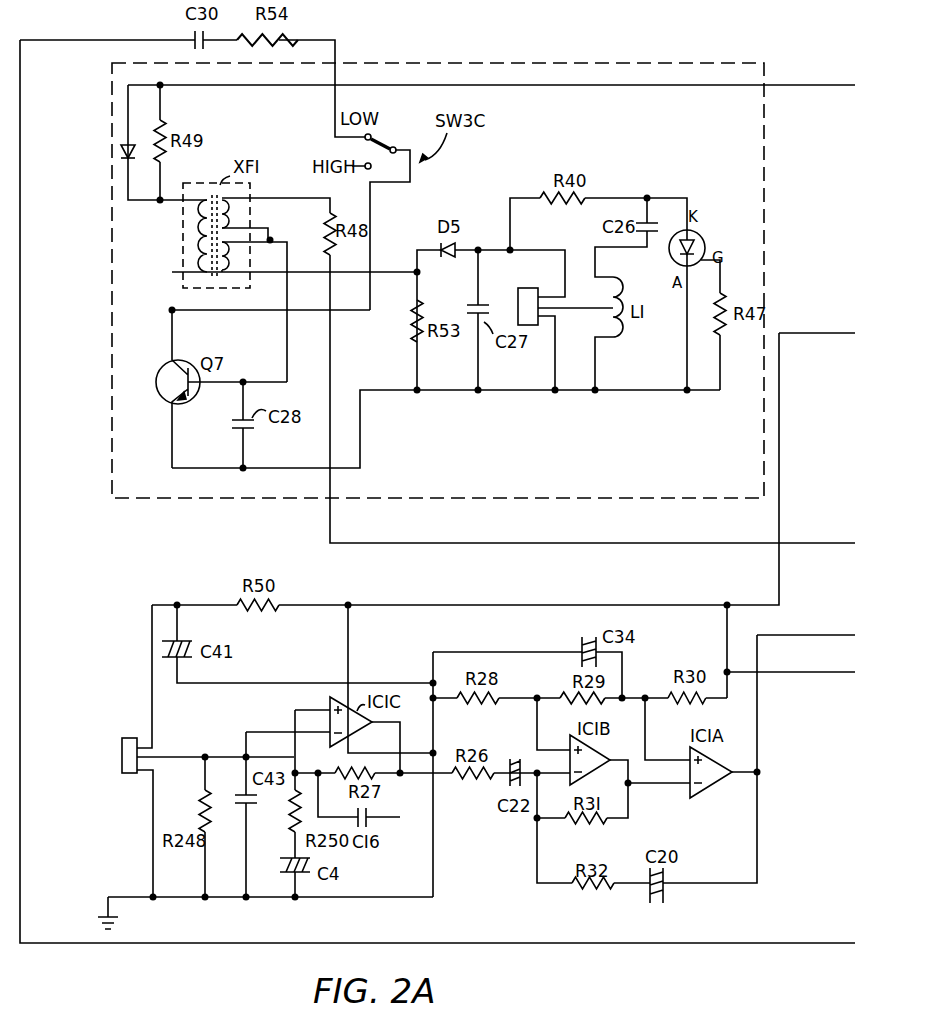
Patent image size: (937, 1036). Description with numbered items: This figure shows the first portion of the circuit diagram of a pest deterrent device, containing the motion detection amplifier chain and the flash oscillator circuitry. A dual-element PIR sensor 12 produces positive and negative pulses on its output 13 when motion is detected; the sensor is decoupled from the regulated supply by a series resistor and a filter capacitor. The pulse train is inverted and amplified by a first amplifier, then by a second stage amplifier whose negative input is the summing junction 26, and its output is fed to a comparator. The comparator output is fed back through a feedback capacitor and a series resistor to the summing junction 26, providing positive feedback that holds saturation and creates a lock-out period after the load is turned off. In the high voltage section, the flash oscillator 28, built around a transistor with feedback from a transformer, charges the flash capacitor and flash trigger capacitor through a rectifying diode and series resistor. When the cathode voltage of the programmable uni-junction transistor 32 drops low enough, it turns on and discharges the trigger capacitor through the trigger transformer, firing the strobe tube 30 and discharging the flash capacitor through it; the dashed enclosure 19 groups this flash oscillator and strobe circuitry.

The sensor 12 is at (120, 738).
The output 13 is at (172, 757).
The high voltage trigger circuit 19 is at (520, 62).
The summing junction 26 is at (527, 760).
The flash oscillator 28 is at (150, 393).
The strobe tube 30 is at (528, 288).
The programmable uni-junction transistor 32 is at (701, 237).